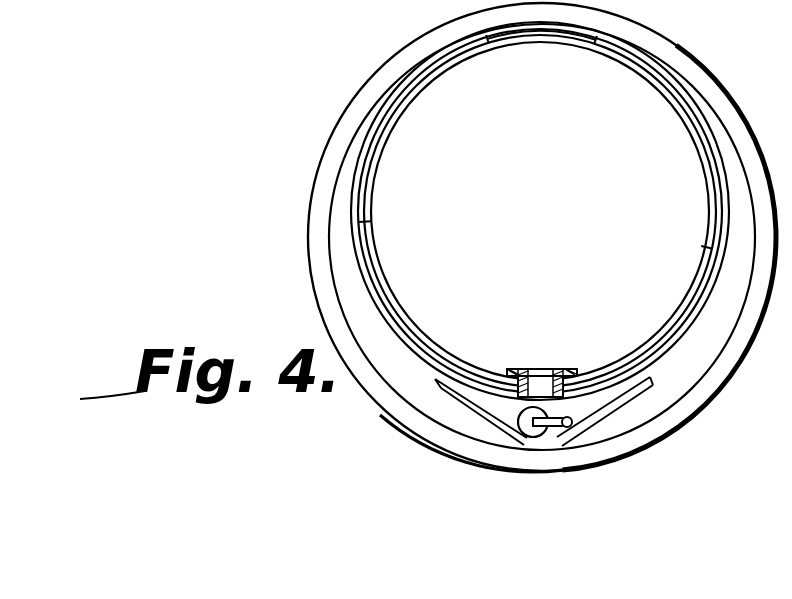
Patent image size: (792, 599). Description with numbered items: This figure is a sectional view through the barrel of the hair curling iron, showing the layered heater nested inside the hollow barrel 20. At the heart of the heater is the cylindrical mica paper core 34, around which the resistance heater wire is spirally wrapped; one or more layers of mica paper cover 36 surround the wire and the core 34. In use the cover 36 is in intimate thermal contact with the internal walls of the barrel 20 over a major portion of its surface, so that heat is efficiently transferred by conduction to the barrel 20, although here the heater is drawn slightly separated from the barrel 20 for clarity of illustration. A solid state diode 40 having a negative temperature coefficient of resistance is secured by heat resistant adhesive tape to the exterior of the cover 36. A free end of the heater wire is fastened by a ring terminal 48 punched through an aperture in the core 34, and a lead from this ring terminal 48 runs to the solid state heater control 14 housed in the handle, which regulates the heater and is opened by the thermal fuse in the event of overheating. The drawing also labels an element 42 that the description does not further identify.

The solid state heater control 14 is at (420, 158).
The hollow barrel 20 is at (315, 187).
The cylindrical mica paper core 34 is at (718, 172).
The mica paper cover 36 is at (355, 250).
The solid state diode 40 is at (563, 445).
The clamp arms 42 is at (468, 400).
The ring terminal 48 is at (541, 370).